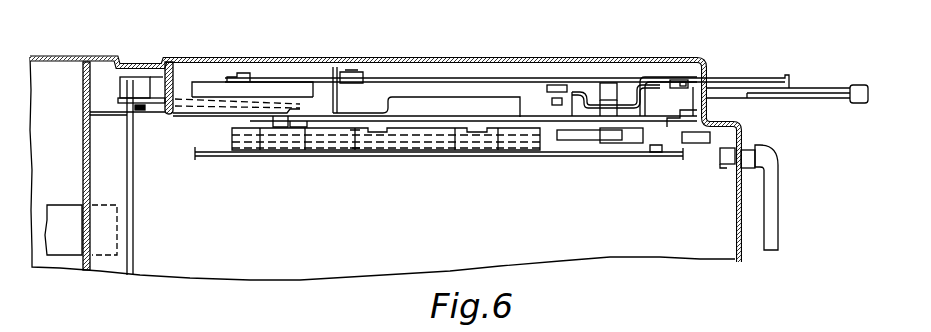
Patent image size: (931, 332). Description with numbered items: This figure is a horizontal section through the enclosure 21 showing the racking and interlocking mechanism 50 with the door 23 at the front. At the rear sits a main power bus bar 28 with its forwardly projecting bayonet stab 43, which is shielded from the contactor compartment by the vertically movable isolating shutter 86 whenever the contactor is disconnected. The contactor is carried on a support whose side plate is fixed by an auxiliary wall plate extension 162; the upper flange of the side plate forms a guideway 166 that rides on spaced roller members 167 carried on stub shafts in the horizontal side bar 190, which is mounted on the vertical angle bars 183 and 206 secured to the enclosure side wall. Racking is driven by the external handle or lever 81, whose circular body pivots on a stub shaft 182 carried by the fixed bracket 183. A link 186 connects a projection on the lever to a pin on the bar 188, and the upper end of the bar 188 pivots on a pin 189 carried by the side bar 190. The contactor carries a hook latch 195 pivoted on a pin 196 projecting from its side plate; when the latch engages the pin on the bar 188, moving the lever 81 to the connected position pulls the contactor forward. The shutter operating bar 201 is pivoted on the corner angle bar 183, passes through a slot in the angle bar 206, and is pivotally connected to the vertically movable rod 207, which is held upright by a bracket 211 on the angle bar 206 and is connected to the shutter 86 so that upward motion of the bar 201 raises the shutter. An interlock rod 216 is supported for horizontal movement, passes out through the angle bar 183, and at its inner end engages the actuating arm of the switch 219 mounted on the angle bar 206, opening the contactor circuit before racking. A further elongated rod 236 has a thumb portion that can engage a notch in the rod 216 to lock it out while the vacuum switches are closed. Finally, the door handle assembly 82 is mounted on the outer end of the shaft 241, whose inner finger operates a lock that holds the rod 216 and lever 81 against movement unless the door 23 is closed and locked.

The enclosure 21 is at (722, 46).
The door 23 is at (742, 126).
The main power bus bar 28 is at (47, 205).
The bayonet stab 43 is at (108, 205).
The racking mechanism 50 is at (473, 168).
The handle or lever 81 is at (862, 70).
The door handle assembly 82 is at (820, 195).
The isolating shutter 86 is at (133, 192).
The auxiliary wall plate extension 162 is at (280, 150).
The guideway or trackway 166 is at (223, 142).
The roller members 167 is at (355, 133).
The stub shaft 182 is at (690, 80).
The angle bar or fixed bracket 183 is at (660, 70).
The link 186 is at (623, 87).
The bar 188 is at (577, 97).
The pin 189 is at (555, 85).
The horizontal side bar 190 is at (185, 113).
The hook latch 195 is at (580, 140).
The pin 196 is at (660, 160).
The bar 201 is at (452, 97).
The structural angle bar 206 is at (173, 72).
The vertically movable rod 207 is at (138, 87).
The bracket 211 is at (157, 80).
The rod 216 is at (497, 80).
The switch 219 is at (212, 85).
The elongated rod 236 is at (353, 75).
The shaft 241 is at (727, 165).